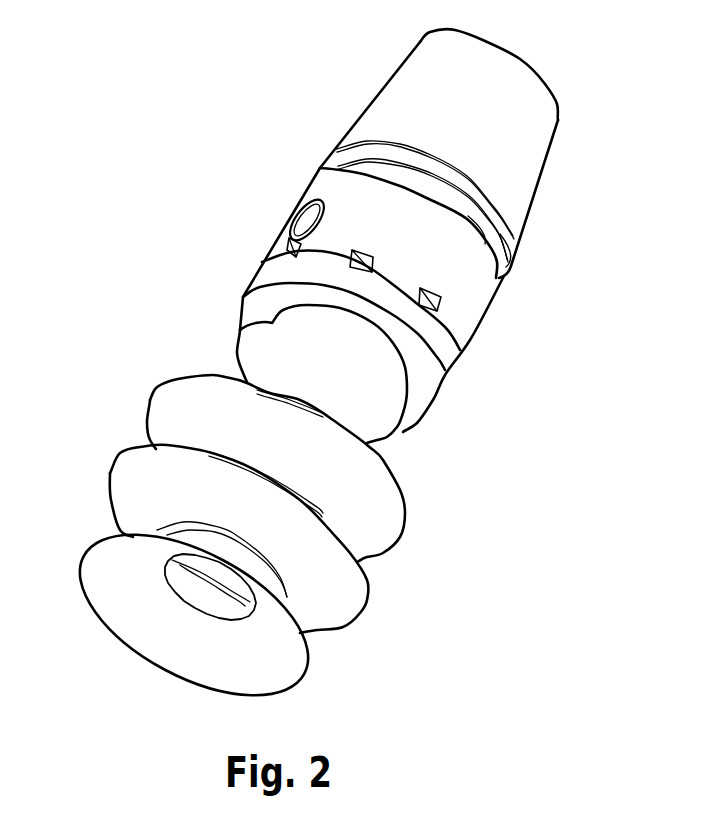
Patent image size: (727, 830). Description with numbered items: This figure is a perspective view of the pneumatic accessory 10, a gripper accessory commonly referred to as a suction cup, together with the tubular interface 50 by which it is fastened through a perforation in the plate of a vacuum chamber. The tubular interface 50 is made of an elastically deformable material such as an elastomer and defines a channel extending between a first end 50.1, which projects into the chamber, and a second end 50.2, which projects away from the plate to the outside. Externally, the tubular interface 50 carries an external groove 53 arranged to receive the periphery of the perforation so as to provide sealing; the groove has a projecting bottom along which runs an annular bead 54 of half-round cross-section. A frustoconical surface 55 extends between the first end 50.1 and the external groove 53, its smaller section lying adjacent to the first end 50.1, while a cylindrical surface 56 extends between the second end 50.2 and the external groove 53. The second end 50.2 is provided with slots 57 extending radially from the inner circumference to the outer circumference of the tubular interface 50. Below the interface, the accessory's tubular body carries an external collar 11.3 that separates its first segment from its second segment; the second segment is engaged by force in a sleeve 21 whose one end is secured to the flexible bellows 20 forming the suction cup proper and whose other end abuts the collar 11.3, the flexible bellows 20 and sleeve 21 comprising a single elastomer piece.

The pneumatic accessory 10 is at (155, 341).
The external collar 11.3 is at (270, 274).
The flexible bellows 20 is at (118, 485).
The sleeve 21 is at (383, 410).
The tubular interface 50 is at (583, 126).
The first end 50.1 is at (519, 60).
The second end 50.2 is at (399, 296).
The external groove 53 is at (447, 183).
The annular bead 54 is at (467, 222).
The frustoconical surface 55 is at (548, 181).
The cylindrical surface 56 is at (283, 204).
The slots 57 is at (364, 249).